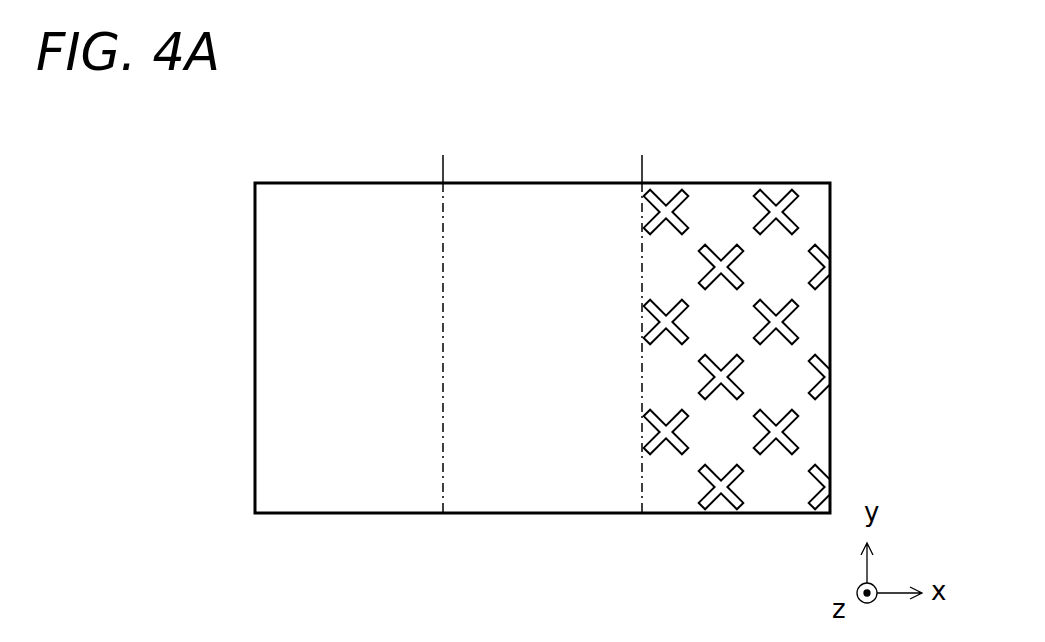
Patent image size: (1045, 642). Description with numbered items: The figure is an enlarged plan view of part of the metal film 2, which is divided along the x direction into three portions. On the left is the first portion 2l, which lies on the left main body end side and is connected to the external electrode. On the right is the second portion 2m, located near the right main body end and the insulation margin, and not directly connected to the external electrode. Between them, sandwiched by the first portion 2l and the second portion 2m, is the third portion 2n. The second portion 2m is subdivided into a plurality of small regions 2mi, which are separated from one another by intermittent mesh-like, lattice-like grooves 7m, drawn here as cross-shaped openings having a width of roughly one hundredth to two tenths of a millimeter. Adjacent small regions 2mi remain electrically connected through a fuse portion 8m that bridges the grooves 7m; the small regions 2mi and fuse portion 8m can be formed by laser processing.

The metal film 2 is at (795, 97).
The first portion 2l is at (443, 155).
The third portion 2n is at (642, 155).
The second portion 2m is at (791, 342).
The small regions 2mi is at (720, 315).
The grooves 7m is at (693, 337).
The fuse portion 8m is at (790, 458).